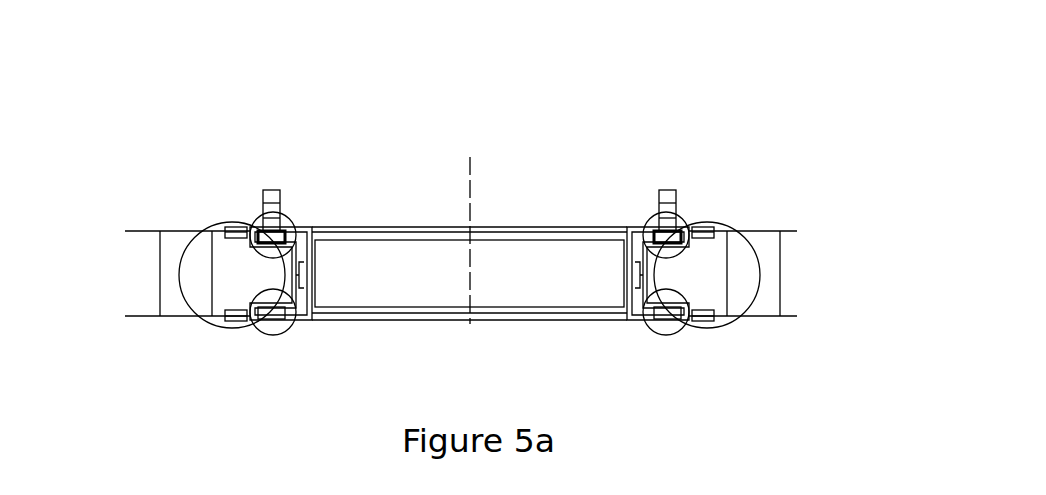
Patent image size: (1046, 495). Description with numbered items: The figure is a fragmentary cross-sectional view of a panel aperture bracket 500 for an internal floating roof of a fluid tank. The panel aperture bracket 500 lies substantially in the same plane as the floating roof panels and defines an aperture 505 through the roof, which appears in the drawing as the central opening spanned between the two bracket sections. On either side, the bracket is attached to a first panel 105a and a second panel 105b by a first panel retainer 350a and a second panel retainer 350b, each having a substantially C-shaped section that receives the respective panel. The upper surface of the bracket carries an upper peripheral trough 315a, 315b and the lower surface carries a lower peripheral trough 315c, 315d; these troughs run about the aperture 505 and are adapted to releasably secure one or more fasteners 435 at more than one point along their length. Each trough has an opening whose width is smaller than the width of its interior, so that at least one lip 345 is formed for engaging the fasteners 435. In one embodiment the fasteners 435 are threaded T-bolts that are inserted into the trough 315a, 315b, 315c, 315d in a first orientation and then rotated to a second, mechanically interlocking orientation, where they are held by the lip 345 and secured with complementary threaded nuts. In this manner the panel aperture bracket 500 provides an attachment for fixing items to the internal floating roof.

The panel aperture bracket 500 is at (722, 128).
The aperture 505 is at (625, 336).
The first panel 105a is at (152, 230).
The second panel 105b is at (763, 230).
The upper peripheral trough 315a is at (253, 221).
The upper peripheral trough 315b is at (690, 220).
The lower peripheral trough 315c is at (252, 328).
The lower peripheral trough 315d is at (668, 335).
The lip 345 is at (273, 320).
The first panel retainer 350a is at (179, 275).
The second panel retainer 350b is at (760, 275).
The fastener 435 is at (272, 188).